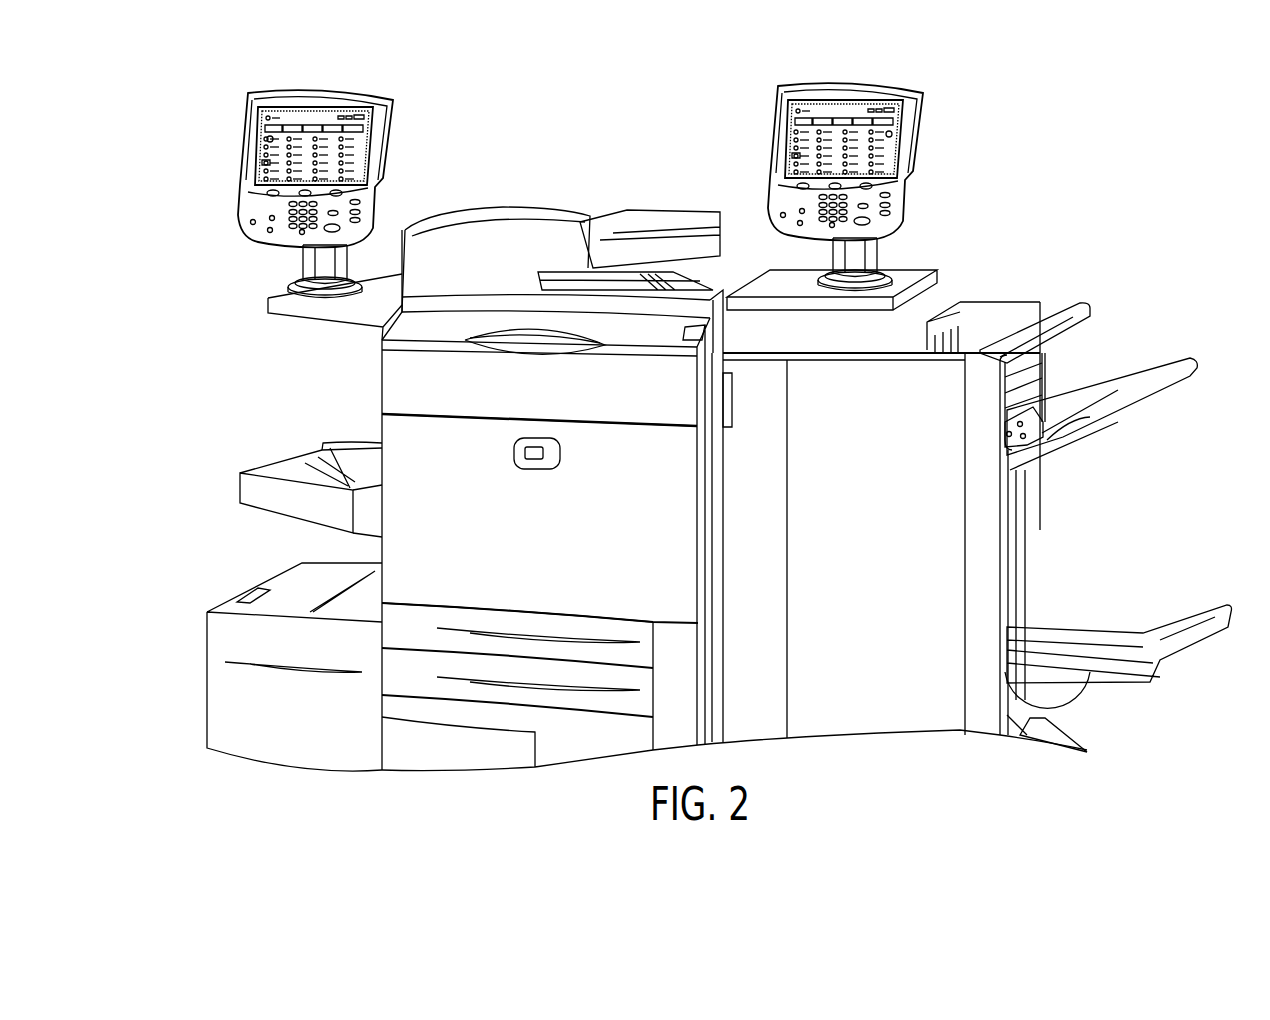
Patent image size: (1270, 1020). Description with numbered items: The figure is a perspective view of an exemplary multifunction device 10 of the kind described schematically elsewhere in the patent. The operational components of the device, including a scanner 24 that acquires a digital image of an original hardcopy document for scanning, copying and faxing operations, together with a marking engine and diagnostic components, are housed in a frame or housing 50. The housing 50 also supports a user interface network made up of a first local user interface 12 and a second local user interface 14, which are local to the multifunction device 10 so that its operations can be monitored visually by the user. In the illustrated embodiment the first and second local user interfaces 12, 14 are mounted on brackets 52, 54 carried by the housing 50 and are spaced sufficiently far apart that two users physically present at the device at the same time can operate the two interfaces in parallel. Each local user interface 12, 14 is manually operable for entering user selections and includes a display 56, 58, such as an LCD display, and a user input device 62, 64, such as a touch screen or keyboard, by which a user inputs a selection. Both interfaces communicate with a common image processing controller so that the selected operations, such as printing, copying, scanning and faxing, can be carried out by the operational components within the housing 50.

The multifunction device 10 is at (275, 439).
The first local user interface 12 is at (393, 135).
The second local user interface 14 is at (776, 112).
The scanner 24 is at (482, 240).
The housing 50 is at (542, 536).
The bracket 52 is at (368, 318).
The bracket 54 is at (905, 270).
The display 56 is at (265, 138).
The display 58 is at (893, 133).
The user input device 62 is at (318, 104).
The second display screen 64 is at (854, 100).